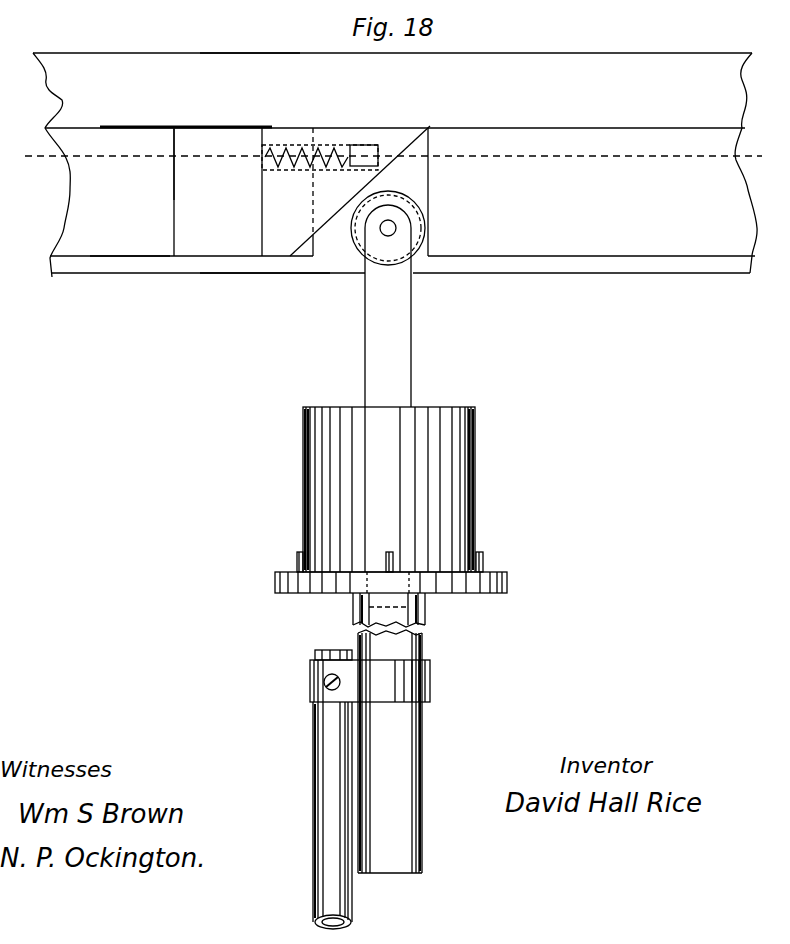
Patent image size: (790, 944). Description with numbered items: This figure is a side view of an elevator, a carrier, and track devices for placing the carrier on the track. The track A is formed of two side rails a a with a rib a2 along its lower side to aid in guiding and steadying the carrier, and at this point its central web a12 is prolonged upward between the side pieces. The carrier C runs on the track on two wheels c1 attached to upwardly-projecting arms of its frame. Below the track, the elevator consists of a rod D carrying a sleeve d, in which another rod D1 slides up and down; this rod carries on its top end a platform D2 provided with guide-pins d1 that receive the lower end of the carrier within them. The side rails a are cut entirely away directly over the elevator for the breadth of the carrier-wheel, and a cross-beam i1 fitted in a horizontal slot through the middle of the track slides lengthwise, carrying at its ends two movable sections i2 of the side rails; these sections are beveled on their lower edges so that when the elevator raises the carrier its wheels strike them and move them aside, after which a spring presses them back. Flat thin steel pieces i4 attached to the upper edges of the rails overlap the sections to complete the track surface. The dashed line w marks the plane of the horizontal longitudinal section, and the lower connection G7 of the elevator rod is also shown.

The track A is at (395, 165).
The side rails a is at (310, 220).
The central web a12 is at (250, 74).
The rib a2 is at (265, 265).
The flat steel pieces i4 is at (175, 152).
The section line w is at (394, 155).
The movable sections i2 is at (320, 184).
The cross-beam i1 is at (378, 147).
The carrier wheels c1 is at (388, 299).
The carrier C is at (395, 489).
The guide-pins d1 is at (390, 550).
The platform D2 is at (401, 582).
The rod connection G7 is at (394, 610).
The sleeve d is at (378, 676).
The rod D is at (322, 815).
The sliding rod D1 is at (401, 751).